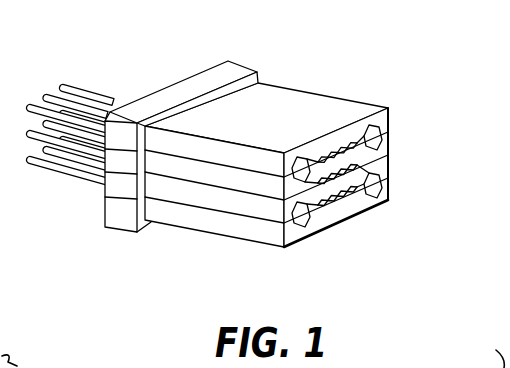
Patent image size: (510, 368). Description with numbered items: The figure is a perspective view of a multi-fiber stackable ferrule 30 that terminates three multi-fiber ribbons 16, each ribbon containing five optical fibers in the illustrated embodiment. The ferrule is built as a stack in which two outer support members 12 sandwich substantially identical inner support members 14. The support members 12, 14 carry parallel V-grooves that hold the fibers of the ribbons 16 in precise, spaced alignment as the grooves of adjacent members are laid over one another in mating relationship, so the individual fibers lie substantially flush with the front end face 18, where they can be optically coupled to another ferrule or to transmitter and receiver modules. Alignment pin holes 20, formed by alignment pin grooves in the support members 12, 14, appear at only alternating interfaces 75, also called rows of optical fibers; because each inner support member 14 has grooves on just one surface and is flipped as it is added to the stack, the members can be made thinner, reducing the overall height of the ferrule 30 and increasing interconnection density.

The electrical connector 30 is at (361, 44).
The outer support member 12 is at (277, 113).
The inner support member 14 is at (392, 141).
The multi-fiber ribbon 16 is at (78, 90).
The front end face 18 is at (377, 223).
The alignment pin hole 20 is at (387, 110).
The alternating interface 75 is at (312, 182).